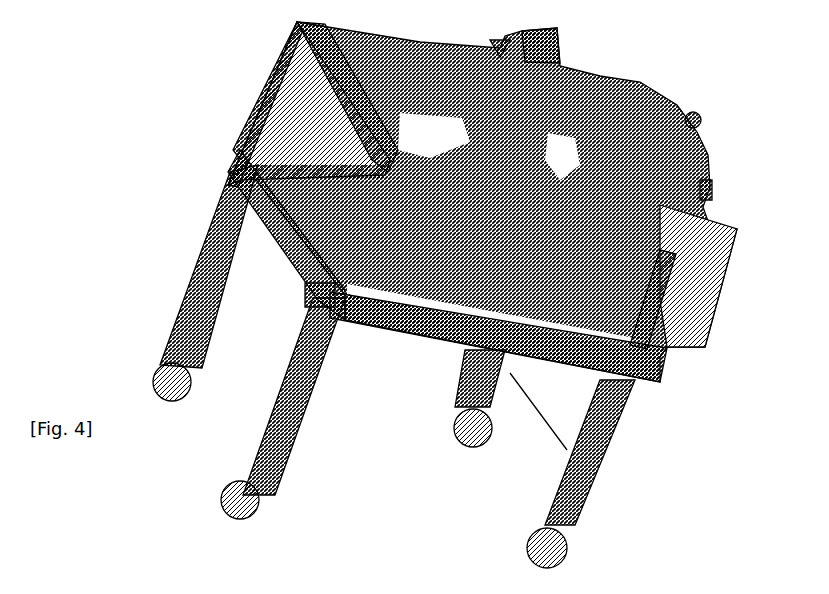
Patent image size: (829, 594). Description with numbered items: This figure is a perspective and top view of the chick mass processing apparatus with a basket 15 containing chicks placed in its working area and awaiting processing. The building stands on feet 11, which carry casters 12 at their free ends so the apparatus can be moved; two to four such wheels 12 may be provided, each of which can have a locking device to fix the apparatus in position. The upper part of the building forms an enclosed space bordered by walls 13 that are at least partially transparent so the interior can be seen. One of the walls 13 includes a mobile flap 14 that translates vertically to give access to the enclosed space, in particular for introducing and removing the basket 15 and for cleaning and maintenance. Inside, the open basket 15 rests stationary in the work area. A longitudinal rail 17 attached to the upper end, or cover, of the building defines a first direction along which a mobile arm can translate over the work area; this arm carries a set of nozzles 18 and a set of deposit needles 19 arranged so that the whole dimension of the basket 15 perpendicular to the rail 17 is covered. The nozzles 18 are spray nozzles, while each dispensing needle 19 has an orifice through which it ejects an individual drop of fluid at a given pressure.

The feet 11 is at (200, 313).
The casters 12 is at (213, 493).
The walls 13 is at (240, 142).
The mobile flap 14 is at (313, 293).
The basket 15 is at (412, 340).
The longitudinal rail 17 is at (710, 107).
The set of nozzles 18 is at (670, 293).
The set of deposit needles 19 is at (710, 190).